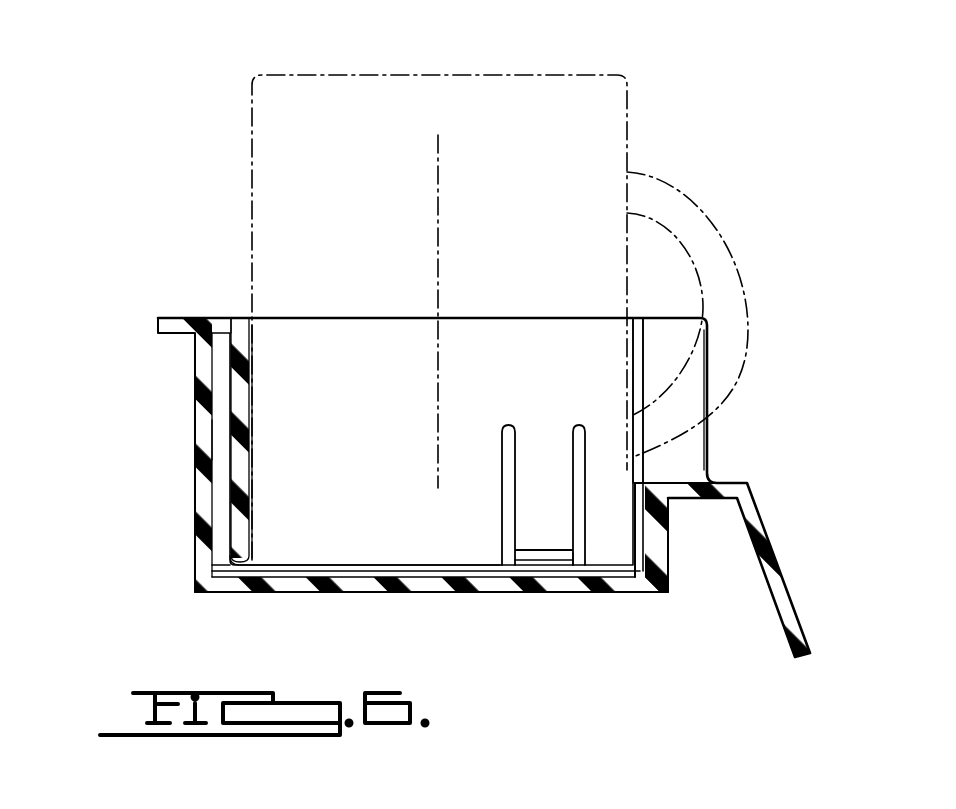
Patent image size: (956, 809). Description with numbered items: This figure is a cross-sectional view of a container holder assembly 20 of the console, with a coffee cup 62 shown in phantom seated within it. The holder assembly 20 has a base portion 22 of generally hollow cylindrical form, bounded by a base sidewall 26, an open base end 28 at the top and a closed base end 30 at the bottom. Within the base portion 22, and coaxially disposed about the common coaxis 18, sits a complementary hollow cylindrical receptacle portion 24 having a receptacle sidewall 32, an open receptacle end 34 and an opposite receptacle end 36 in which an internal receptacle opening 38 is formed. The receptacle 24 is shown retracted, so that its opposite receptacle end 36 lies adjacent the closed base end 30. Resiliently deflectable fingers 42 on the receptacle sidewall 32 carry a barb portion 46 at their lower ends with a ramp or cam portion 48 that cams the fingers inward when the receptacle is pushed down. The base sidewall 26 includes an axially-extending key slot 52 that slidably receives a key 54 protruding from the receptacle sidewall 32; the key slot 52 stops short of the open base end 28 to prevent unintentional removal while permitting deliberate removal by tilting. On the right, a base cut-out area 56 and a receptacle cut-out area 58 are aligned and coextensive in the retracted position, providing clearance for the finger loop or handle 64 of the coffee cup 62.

The coaxis 18 is at (438, 290).
The container holder assembly 20 is at (115, 311).
The base portion 22 is at (185, 362).
The receptacle portion 24 is at (217, 406).
The base sidewall 26 is at (650, 546).
The open base end 28 is at (222, 318).
The closed base end 30 is at (245, 580).
The receptacle sidewall 32 is at (252, 472).
The open receptacle end 34 is at (235, 318).
The opposite receptacle end 36 is at (268, 567).
The internal receptacle opening 38 is at (283, 570).
The resiliently deflectable fingers 42 is at (530, 490).
The barb portion 46 is at (527, 553).
The ramp or cam portion 48 is at (555, 560).
The key slot 52 is at (228, 440).
The key 54 is at (210, 580).
The base cut-out area 56 is at (683, 343).
The receptacle cut-out area 58 is at (640, 425).
The coffee cup 62 is at (548, 88).
The finger loop or handle 64 is at (720, 243).